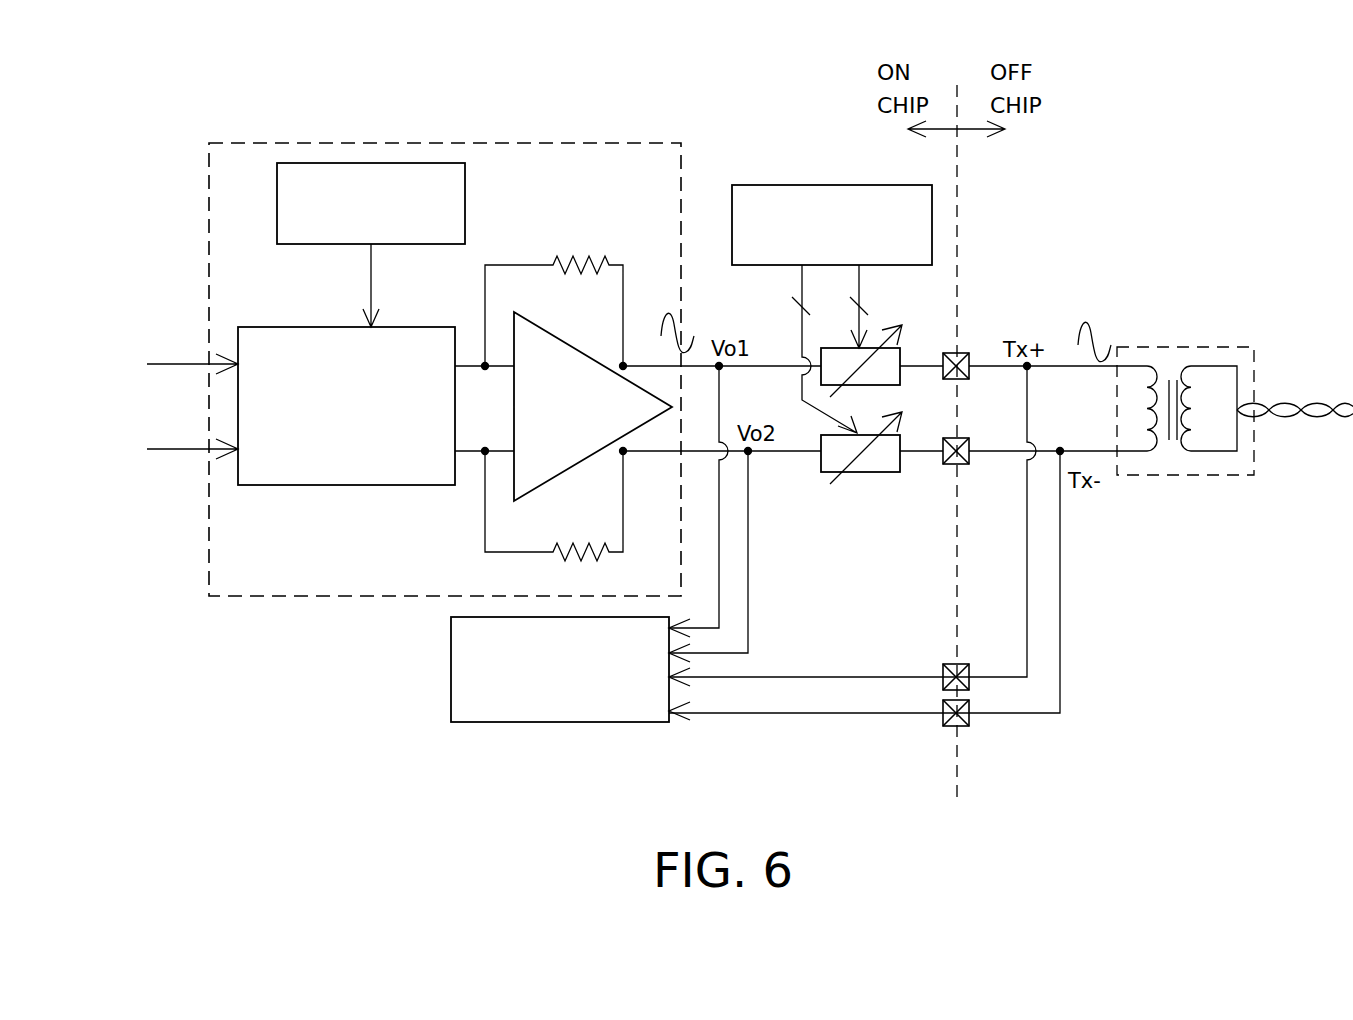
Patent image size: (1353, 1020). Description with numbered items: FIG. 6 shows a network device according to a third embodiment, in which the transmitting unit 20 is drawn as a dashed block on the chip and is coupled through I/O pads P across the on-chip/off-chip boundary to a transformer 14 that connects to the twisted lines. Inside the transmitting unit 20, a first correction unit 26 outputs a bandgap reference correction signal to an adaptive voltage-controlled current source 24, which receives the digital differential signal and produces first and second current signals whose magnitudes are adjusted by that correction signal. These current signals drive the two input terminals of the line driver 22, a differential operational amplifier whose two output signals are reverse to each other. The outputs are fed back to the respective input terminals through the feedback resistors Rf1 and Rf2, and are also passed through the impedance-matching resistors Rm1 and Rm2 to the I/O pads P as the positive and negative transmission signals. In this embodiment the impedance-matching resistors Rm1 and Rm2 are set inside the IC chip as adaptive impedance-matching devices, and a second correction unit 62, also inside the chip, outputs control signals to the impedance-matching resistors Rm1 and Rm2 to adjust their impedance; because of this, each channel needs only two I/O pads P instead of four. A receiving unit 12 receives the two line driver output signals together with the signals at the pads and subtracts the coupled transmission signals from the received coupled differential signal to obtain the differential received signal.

The receiving unit 12 is at (561, 722).
The transformer 14 is at (1196, 347).
The transmitting unit 20 is at (555, 143).
The line driver 22 is at (631, 406).
The adaptive voltage-controlled current source 24 is at (320, 406).
The first correction unit 26 is at (371, 245).
The second correction unit 62 is at (832, 309).
The feedback resistor Rf1 is at (554, 311).
The feedback resistor Rf2 is at (554, 506).
The impedance-matching resistor Rm1 is at (861, 361).
The impedance-matching resistor Rm2 is at (861, 448).
The I/O pad P is at (960, 353).